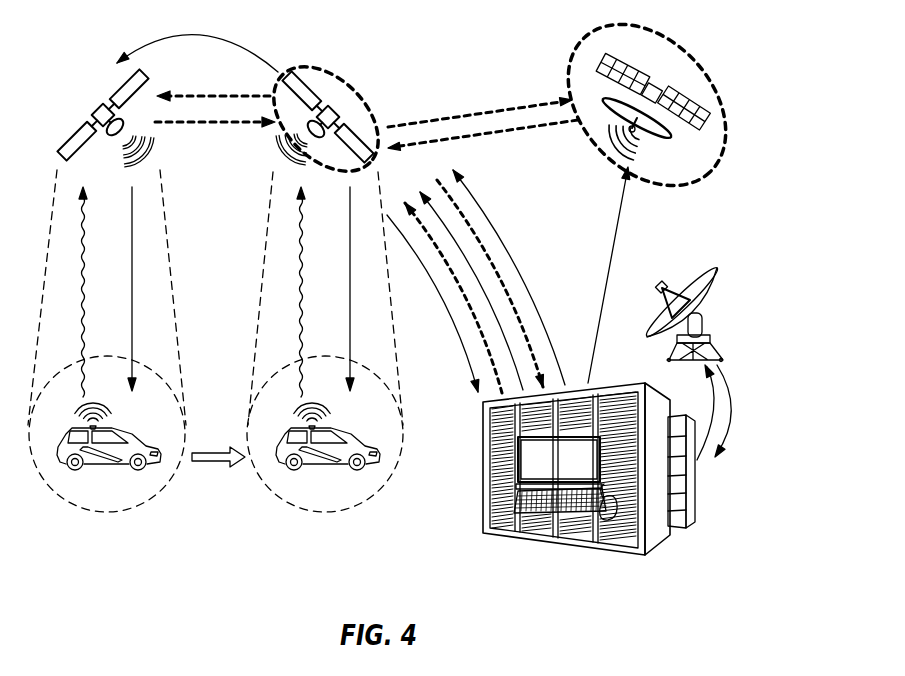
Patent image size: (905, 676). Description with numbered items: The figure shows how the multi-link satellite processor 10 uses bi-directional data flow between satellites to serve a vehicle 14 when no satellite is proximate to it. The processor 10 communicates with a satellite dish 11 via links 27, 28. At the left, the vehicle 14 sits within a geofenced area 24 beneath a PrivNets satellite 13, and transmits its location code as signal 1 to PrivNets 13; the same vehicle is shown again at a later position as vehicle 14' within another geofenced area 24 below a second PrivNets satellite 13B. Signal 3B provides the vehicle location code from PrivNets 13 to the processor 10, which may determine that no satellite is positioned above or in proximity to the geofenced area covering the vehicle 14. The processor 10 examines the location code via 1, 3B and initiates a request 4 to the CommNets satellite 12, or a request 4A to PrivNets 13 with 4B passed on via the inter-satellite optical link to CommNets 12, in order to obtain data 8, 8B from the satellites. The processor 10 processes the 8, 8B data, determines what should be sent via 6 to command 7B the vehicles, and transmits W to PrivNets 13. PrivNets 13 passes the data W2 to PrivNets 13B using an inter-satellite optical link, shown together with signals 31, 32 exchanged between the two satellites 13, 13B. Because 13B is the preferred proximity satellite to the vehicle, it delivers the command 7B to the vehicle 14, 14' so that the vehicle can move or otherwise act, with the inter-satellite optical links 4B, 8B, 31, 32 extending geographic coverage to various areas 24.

The inter-satellite data pass W2 is at (197, 44).
The preferred proximity PrivNets satellite 13B is at (108, 120).
The inter-satellite optical link signal 31 is at (213, 87).
The inter-satellite optical link signal 32 is at (215, 131).
The PrivNets satellite 13 is at (326, 119).
The request via PrivNets to CommNets 4B is at (480, 111).
The satellite data via inter-satellite link 8B is at (483, 139).
The CommNets satellite 12 is at (647, 108).
The geofenced area 24 is at (210, 297).
The vehicle location code signal 1 is at (187, 292).
The command to vehicle 7B is at (231, 289).
The vehicle 14 is at (107, 434).
The vehicle at later position 14' is at (325, 434).
The vehicle location data signal 3B is at (433, 303).
The request to PrivNets 4A is at (453, 298).
The command signal to satellites 6 is at (471, 291).
The satellite data 8 is at (490, 283).
The processed data transmission W is at (509, 277).
The request to CommNets 4 is at (609, 275).
The satellite dish 11 is at (682, 312).
The multi-link satellite processor 10 is at (578, 469).
The dish-to-processor link 27 is at (702, 412).
The processor-to-dish link 28 is at (733, 411).